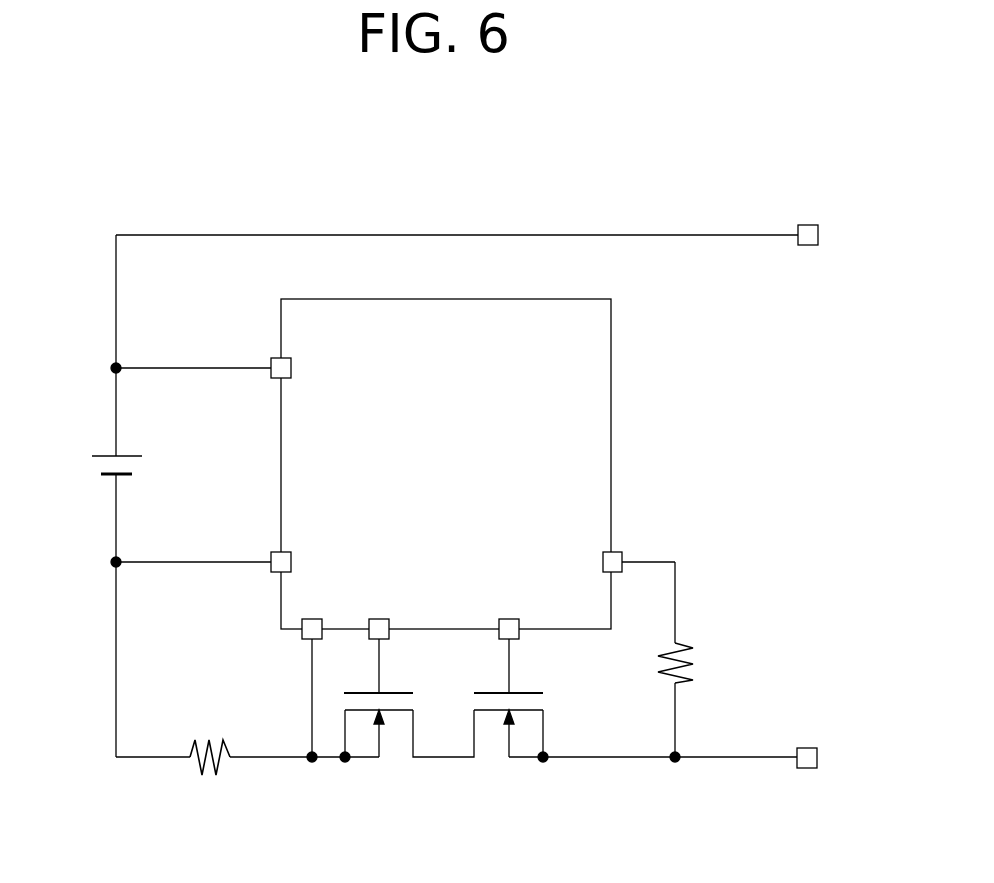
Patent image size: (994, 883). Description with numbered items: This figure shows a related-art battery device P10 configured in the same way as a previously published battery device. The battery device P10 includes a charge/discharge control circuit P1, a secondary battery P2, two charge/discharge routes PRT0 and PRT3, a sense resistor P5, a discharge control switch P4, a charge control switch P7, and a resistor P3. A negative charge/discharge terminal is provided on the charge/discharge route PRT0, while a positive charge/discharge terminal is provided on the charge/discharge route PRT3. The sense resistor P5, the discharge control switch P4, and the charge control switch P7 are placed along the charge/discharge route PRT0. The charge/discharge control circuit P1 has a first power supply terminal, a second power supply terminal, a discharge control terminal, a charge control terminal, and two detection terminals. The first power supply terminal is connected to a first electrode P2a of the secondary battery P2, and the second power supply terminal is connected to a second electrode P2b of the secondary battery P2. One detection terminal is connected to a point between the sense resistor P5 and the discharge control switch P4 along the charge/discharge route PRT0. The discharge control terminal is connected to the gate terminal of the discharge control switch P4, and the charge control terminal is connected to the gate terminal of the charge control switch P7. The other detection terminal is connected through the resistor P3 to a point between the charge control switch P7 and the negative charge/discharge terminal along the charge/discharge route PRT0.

The charge/discharge control circuit P1 is at (611, 383).
The secondary battery P2 is at (99, 466).
The first electrode P2a is at (131, 455).
The second electrode P2b is at (128, 474).
The resistor P3 is at (660, 668).
The discharge control switch P4 is at (357, 759).
The sense resistor P5 is at (213, 777).
The charge control switch P7 is at (524, 759).
The battery device P10 is at (522, 225).
The charge/discharge route PRT3 is at (648, 234).
The charge/discharge route PRT0 is at (727, 760).